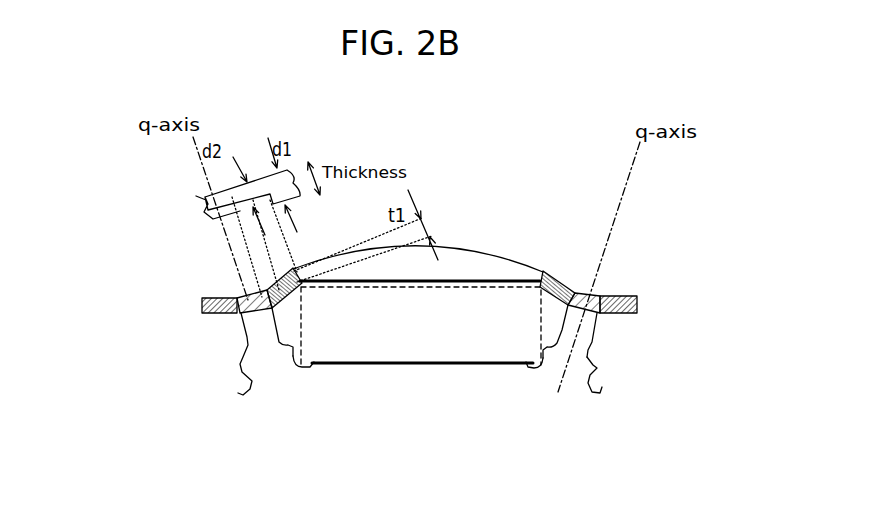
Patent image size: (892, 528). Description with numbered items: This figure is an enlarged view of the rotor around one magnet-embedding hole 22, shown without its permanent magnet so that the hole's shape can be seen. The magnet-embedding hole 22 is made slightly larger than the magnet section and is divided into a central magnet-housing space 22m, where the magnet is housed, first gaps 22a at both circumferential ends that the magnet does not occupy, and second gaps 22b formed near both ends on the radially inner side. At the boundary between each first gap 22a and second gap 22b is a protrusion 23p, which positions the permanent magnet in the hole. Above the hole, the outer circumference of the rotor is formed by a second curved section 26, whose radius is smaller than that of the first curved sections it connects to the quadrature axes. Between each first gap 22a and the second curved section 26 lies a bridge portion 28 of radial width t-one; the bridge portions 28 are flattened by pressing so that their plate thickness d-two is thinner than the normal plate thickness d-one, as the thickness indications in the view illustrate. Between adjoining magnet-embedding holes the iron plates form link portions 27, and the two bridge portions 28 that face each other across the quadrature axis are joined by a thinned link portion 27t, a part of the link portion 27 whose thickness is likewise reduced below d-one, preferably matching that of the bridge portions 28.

The magnet-embedding hole 22 is at (588, 445).
The first gap 22a is at (290, 316).
The second gap 22b is at (308, 368).
The magnet-housing space 22m is at (450, 343).
The protrusion 23p is at (598, 372).
The second curved section 26 is at (273, 288).
The link portion 27 is at (258, 328).
The thinned link portion 27t is at (240, 315).
The bridge portion 28 is at (298, 272).